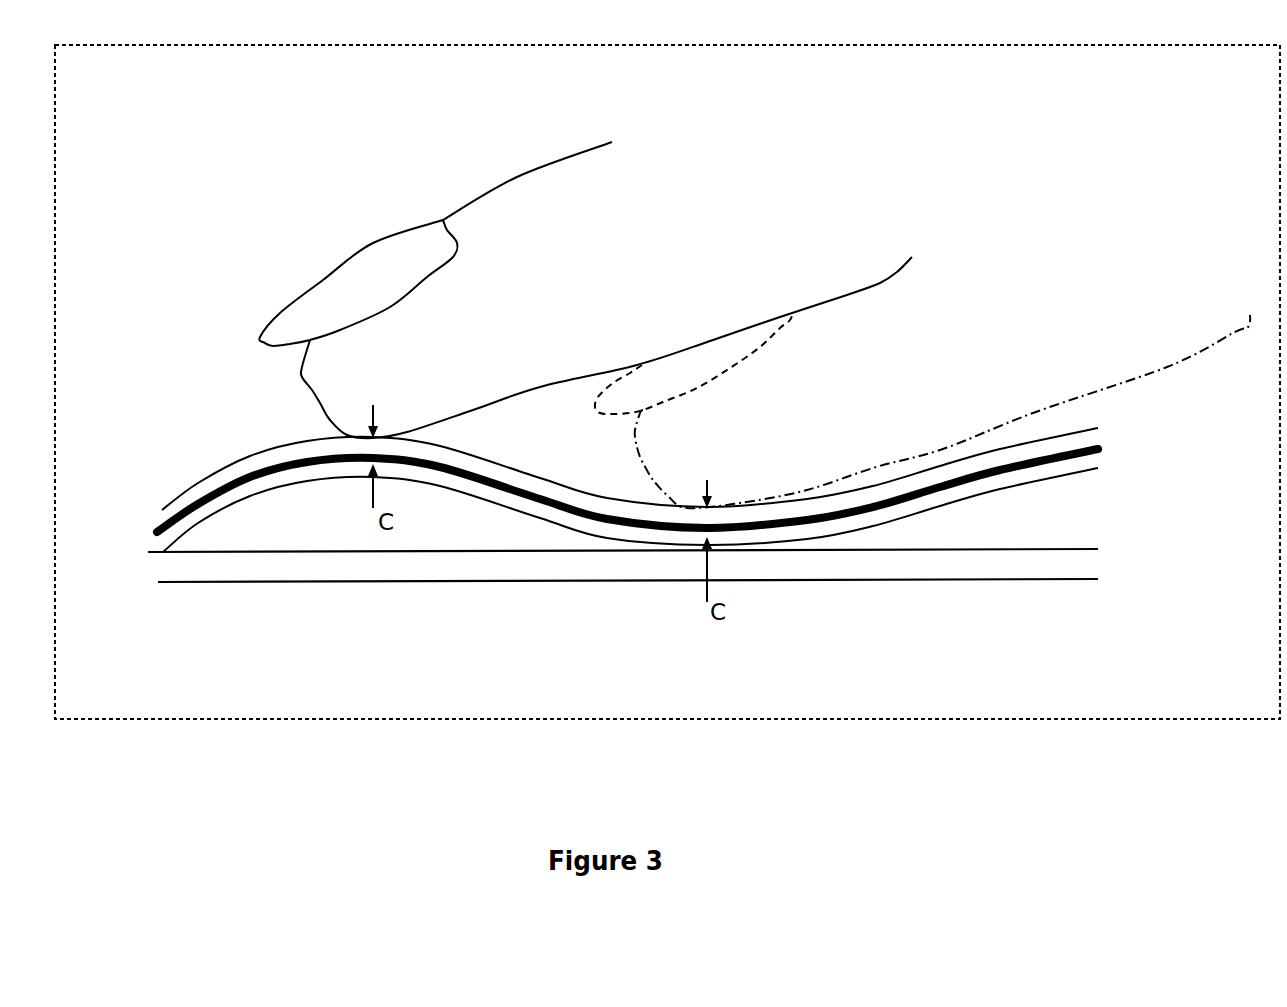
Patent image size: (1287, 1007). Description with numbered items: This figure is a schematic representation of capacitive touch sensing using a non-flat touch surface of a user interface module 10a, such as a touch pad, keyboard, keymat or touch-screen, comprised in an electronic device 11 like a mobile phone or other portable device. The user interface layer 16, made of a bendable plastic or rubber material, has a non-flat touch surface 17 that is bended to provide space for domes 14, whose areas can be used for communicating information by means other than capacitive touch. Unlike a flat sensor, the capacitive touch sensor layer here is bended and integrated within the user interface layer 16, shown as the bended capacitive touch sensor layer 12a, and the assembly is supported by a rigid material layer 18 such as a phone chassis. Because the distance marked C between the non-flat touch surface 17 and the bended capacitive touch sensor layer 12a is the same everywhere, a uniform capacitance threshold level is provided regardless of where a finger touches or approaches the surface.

The user interface module 10a is at (772, 205).
The electronic device 11 is at (1043, 720).
The bended capacitive touch sensor layer 12a is at (195, 502).
The dome 14 is at (308, 523).
The user interface layer 16 is at (332, 452).
The non-flat touch surface 17 is at (250, 462).
The rigid material layer 18 is at (797, 560).